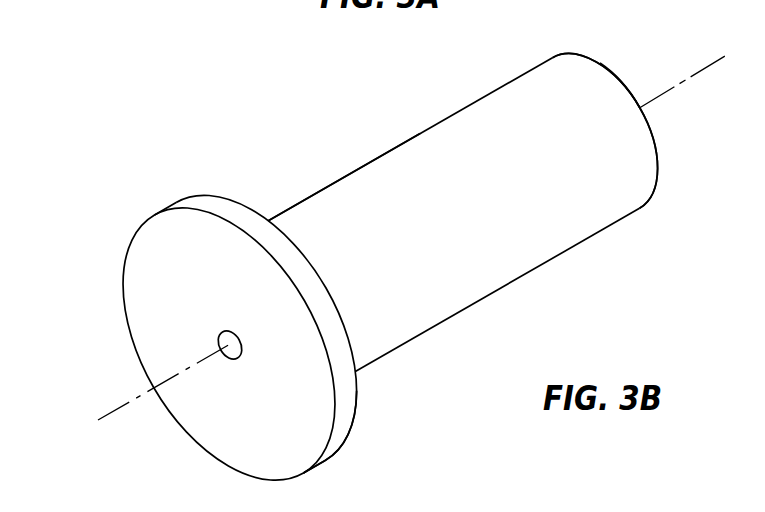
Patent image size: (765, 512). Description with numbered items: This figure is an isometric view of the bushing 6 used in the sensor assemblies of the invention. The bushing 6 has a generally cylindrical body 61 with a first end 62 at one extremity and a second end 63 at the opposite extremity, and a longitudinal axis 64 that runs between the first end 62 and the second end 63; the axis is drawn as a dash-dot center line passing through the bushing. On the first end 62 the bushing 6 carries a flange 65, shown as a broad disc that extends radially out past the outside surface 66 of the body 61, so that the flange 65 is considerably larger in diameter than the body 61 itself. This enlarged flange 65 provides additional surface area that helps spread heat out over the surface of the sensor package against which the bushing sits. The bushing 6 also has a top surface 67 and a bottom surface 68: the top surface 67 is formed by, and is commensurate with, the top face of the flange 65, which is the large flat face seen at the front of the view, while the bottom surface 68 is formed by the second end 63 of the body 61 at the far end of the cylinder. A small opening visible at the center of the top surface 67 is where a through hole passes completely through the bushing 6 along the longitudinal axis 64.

The bushing 6 is at (262, 113).
The body 61 is at (493, 117).
The first end 62 is at (163, 209).
The second end 63 is at (600, 63).
The longitudinal axis 64 is at (113, 410).
The flange 65 is at (342, 412).
The outside surface 66 is at (393, 148).
The top surface 67 is at (158, 261).
The bottom surface 68 is at (623, 88).